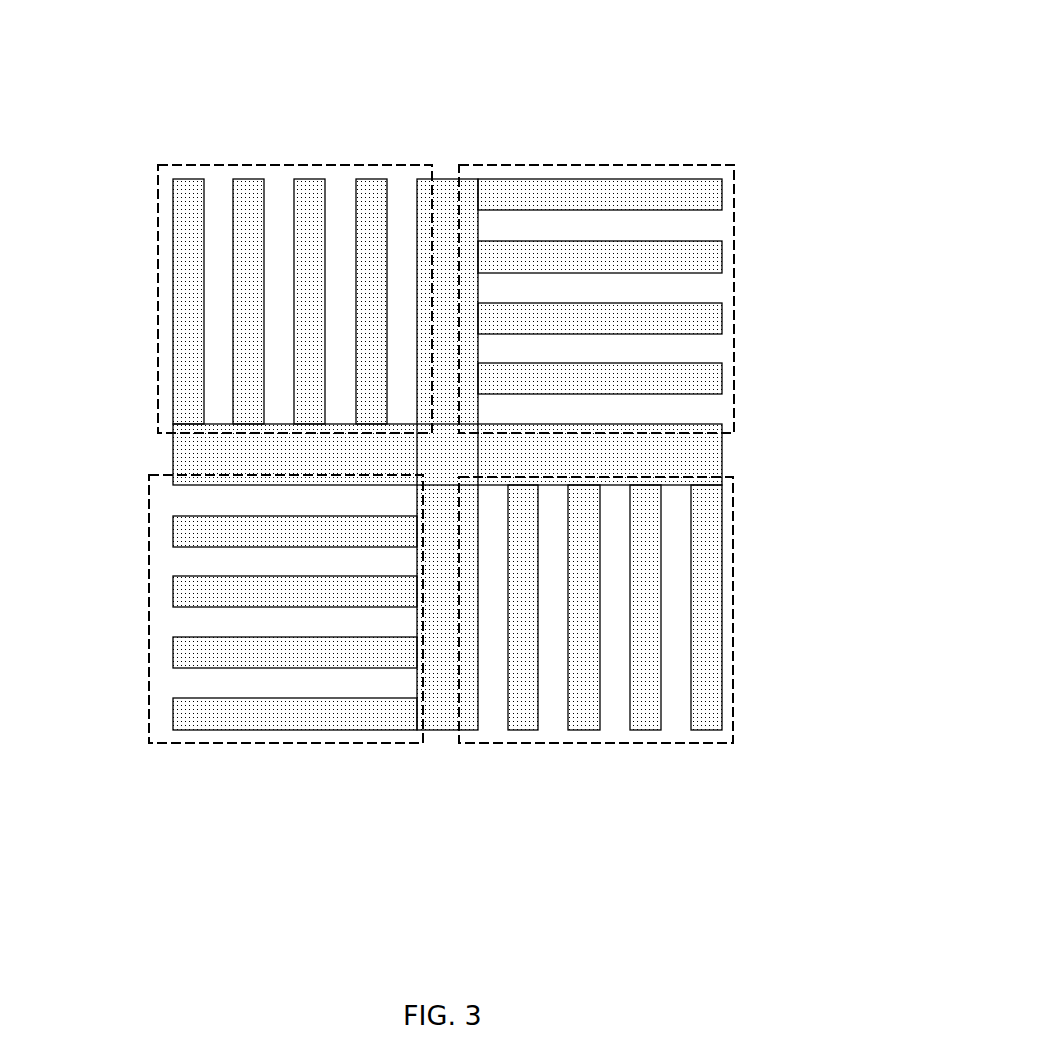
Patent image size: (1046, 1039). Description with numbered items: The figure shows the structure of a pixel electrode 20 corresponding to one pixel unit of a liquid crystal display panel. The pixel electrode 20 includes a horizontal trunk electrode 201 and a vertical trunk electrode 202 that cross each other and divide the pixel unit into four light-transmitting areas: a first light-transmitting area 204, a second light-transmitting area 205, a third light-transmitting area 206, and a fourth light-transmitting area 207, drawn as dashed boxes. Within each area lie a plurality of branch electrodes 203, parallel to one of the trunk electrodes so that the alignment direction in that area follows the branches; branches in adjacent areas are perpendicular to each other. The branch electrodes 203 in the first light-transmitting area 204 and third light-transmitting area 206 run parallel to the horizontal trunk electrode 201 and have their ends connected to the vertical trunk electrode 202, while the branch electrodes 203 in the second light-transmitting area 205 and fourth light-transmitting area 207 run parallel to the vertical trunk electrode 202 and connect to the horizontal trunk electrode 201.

The pixel electrode 20 is at (712, 106).
The horizontal trunk electrode 201 is at (723, 457).
The vertical trunk electrode 202 is at (448, 181).
The branch electrodes 203 is at (323, 181).
The first light-transmitting area 204 is at (735, 278).
The second light-transmitting area 205 is at (157, 323).
The third light-transmitting area 206 is at (149, 627).
The fourth light-transmitting area 207 is at (733, 658).